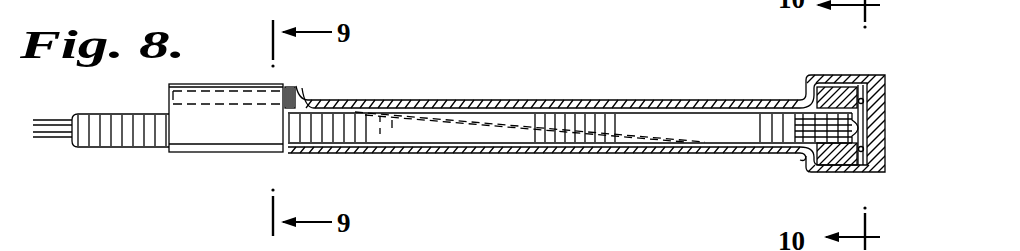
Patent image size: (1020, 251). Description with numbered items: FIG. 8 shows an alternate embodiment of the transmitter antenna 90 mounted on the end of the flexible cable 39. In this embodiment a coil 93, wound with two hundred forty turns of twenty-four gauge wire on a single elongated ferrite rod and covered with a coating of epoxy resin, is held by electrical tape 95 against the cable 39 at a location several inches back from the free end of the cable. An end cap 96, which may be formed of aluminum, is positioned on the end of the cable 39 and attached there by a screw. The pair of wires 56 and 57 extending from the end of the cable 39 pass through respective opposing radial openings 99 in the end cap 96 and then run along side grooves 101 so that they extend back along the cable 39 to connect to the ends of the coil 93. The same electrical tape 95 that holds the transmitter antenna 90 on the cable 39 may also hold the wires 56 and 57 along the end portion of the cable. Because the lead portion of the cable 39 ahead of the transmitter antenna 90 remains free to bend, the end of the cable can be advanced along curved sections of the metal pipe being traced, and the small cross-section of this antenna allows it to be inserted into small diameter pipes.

The cable 39 is at (137, 148).
The wire 56 is at (47, 118).
The wire 57 is at (50, 140).
The transmitter antenna 90 is at (219, 78).
The coil 93 is at (290, 87).
The electrical tape 95 is at (243, 138).
The end cap 96 is at (800, 163).
The radial openings 99 is at (866, 99).
The side grooves 101 is at (833, 87).